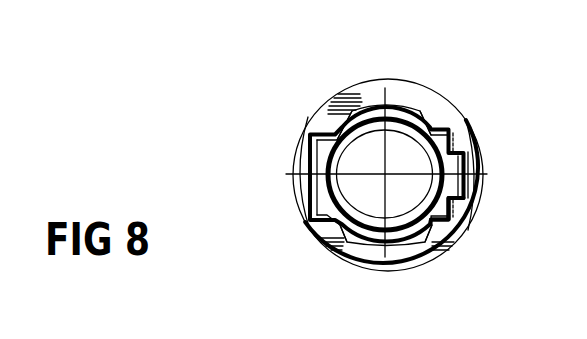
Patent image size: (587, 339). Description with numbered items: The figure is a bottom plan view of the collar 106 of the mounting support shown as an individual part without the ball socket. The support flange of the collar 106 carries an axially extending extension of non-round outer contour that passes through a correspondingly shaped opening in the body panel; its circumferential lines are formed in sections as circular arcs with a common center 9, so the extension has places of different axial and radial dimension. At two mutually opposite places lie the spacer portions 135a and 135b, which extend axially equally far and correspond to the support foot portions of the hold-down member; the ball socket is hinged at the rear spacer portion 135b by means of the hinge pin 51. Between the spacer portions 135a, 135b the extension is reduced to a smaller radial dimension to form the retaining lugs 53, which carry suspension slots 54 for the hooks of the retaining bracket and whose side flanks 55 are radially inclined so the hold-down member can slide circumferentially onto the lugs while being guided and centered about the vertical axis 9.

The common center / vertical axis 9 is at (385, 174).
The hinge pin 51 is at (467, 207).
The retaining lugs 53 is at (404, 107).
The suspension slots 54 is at (363, 104).
The side flanks 55 is at (347, 126).
The collar 106 is at (433, 118).
The spacer portion 135a is at (304, 178).
The spacer portion 135b is at (470, 169).